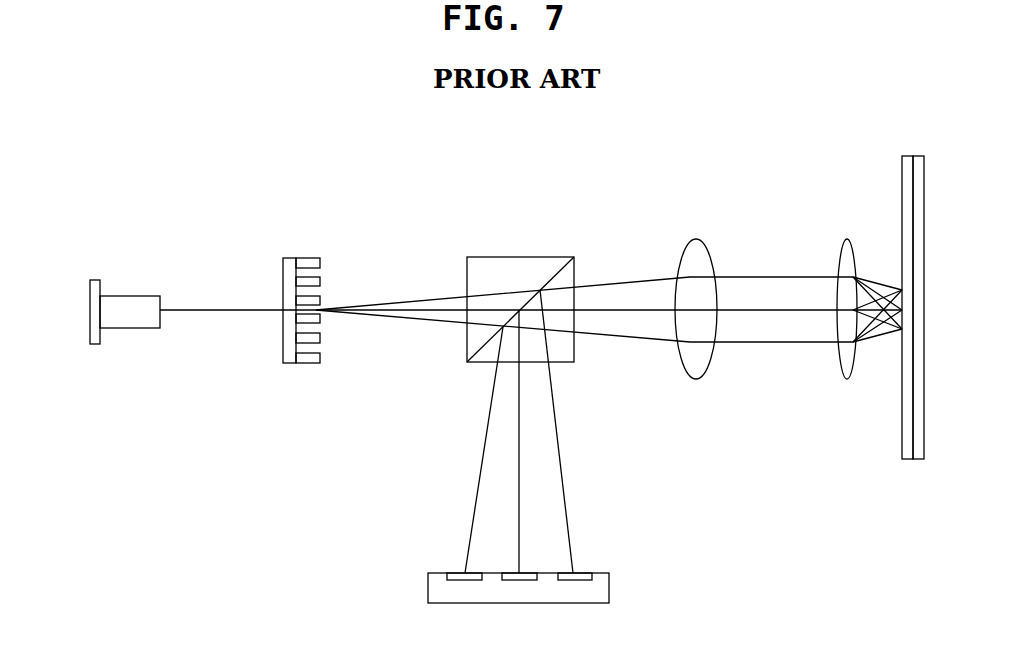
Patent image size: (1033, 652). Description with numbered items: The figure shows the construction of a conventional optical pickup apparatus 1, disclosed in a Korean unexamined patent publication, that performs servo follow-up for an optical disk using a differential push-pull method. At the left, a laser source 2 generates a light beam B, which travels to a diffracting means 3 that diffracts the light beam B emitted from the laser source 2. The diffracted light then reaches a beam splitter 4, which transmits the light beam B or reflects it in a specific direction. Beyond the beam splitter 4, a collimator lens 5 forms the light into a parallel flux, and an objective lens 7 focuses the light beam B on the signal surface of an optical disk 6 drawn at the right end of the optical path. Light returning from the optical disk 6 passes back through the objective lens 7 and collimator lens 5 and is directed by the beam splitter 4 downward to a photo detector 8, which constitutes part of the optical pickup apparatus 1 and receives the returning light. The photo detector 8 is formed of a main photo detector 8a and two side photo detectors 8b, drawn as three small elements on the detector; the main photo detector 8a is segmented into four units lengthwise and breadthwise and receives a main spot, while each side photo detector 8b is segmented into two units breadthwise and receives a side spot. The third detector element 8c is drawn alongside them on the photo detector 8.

The optical pickup apparatus 1 is at (585, 172).
The laser source 2 is at (125, 300).
The light beam B is at (220, 308).
The diffracting means 3 is at (307, 262).
The beam splitter 4 is at (522, 260).
The collimator lens 5 is at (697, 238).
The optical disk 6 is at (902, 430).
The objective lens 7 is at (848, 238).
The photo detector 8 is at (609, 583).
The main photo detector 8a is at (510, 571).
The side photo detector 8b is at (455, 571).
The sub photodetector 8c is at (580, 571).